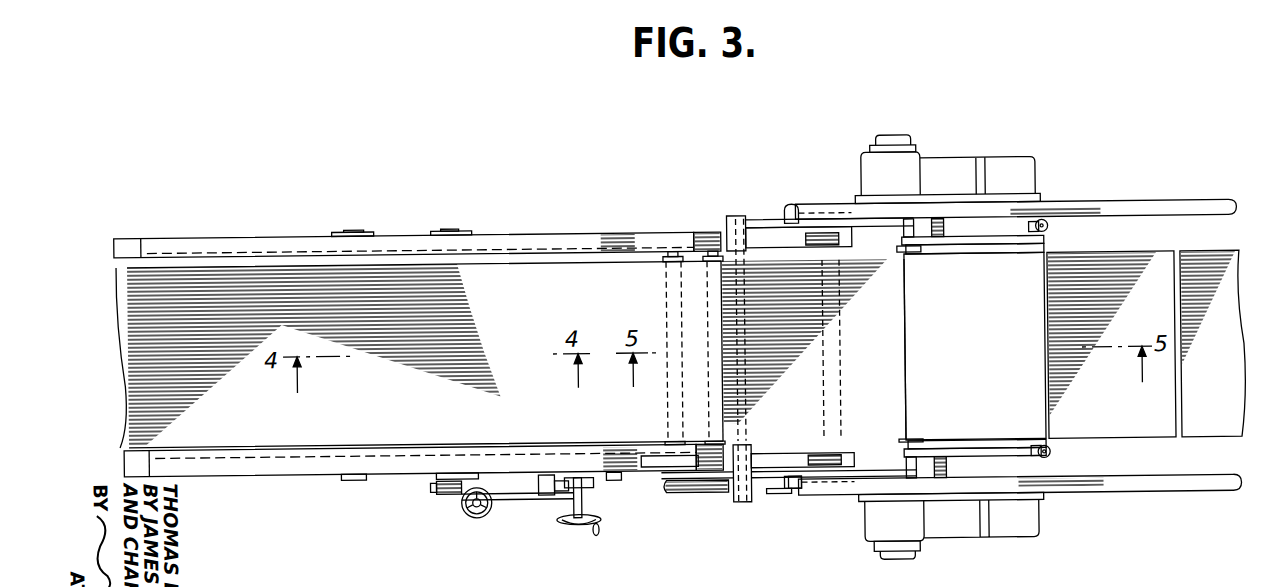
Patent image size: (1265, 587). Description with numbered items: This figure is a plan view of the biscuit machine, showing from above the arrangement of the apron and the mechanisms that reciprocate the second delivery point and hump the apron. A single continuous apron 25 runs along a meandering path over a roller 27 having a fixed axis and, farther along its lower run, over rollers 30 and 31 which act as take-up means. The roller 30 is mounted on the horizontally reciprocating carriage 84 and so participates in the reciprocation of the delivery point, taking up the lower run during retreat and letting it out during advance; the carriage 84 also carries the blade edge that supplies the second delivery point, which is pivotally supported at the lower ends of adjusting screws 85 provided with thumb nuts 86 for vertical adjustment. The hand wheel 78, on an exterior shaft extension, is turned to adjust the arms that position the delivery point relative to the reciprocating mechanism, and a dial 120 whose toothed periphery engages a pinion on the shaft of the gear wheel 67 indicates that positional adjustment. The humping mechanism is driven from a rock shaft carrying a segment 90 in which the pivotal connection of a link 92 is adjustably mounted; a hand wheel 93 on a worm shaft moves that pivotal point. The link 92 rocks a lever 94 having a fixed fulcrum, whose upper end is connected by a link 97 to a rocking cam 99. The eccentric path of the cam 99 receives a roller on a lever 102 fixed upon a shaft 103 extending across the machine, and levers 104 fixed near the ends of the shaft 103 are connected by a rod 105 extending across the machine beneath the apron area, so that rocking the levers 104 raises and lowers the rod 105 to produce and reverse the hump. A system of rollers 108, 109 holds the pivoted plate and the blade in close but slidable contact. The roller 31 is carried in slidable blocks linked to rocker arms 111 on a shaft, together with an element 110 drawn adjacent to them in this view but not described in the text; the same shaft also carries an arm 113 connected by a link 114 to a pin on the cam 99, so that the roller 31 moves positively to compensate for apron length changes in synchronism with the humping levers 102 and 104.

The apron 25 is at (145, 303).
The roller 27 is at (679, 293).
The roller 30 is at (713, 348).
The roller 31 is at (838, 350).
The gear wheel 67 is at (575, 525).
The hand wheel 78 is at (585, 486).
The carriage 84 is at (980, 248).
The adjusting screws 85 is at (1037, 235).
The thumb nuts 86 is at (1048, 232).
The segment 90 is at (440, 488).
The link 92 is at (523, 498).
The hand wheel 93 is at (469, 514).
The lever 94 is at (553, 484).
The link 97 is at (688, 476).
The rocking cam 99 is at (668, 491).
The lever 102 is at (735, 503).
The shaft 103 is at (750, 378).
The levers 104 is at (767, 229).
The rod 105 is at (906, 309).
The rollers 108 is at (934, 255).
The rollers 109 is at (1028, 257).
The bolt 110 is at (800, 215).
The rocker arms 111 is at (792, 208).
The arm 113 is at (784, 486).
The link 114 is at (775, 496).
The dial 120 is at (612, 480).